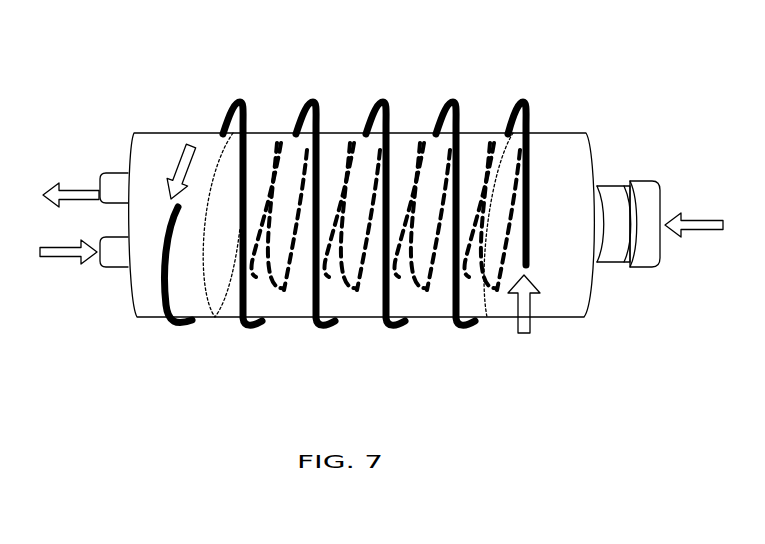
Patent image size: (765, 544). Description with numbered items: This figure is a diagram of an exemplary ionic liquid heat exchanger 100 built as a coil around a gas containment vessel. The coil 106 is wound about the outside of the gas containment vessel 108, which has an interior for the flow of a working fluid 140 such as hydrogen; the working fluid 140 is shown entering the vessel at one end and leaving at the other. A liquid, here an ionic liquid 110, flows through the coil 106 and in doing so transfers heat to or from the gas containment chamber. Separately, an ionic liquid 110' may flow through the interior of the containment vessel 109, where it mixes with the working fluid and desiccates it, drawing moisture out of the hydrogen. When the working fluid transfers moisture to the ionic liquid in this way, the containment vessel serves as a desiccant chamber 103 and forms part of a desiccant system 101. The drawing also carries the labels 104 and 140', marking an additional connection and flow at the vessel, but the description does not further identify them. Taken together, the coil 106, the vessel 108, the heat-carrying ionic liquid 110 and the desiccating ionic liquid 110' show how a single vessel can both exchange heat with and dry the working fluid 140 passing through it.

The ionic liquid heat exchanger 100 is at (314, 78).
The desiccant system 101 is at (370, 78).
The desiccant chamber 103 is at (140, 147).
The inlet port 104 is at (66, 266).
The coil 106 is at (231, 135).
The gas containment vessel 108 is at (570, 167).
The interior of the containment vessel 109 is at (400, 165).
The ionic liquid 110 is at (187, 188).
The ionic liquid 110' is at (511, 194).
The working fluid 140 is at (694, 177).
The fluid outlet flow 140' is at (85, 149).